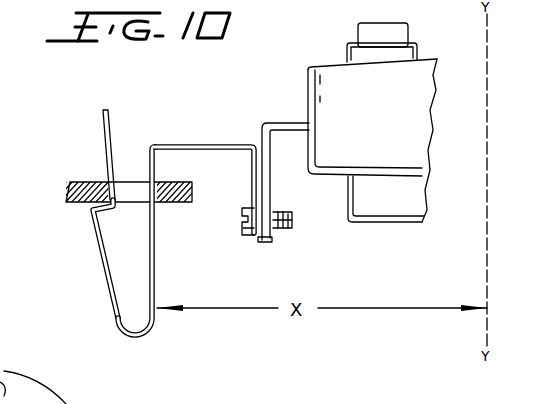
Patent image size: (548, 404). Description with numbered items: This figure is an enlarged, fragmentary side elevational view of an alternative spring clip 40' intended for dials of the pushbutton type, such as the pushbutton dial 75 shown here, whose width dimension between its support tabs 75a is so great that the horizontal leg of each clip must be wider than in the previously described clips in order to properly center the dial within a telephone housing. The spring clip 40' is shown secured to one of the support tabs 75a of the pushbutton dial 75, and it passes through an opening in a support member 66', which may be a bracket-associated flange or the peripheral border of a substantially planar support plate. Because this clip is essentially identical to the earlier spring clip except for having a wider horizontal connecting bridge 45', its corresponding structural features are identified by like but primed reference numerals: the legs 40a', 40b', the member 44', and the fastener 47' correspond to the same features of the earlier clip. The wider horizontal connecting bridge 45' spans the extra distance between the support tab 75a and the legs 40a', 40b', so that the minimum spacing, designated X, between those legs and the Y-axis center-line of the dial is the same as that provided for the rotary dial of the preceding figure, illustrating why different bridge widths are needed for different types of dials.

The spring clip 40' is at (134, 218).
The spring clip leg 40a' is at (85, 259).
The spring clip leg 40b' is at (166, 241).
The spring clip member 44' is at (75, 145).
The horizontal connecting bridge 45' is at (203, 167).
The fastener 47' is at (294, 234).
The support member 66' is at (125, 172).
The pushbutton dial 75 is at (298, 72).
The support tab 75a is at (273, 120).